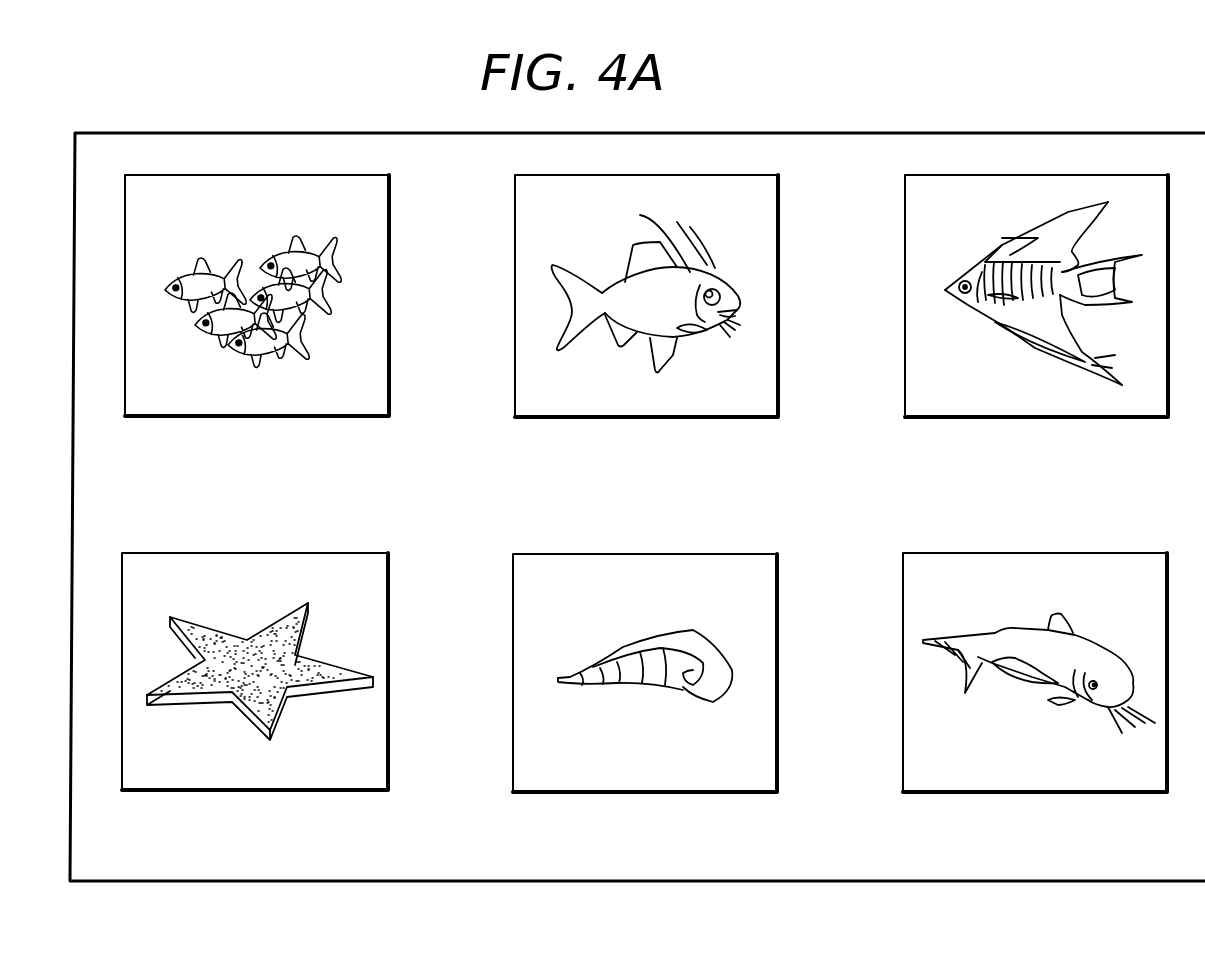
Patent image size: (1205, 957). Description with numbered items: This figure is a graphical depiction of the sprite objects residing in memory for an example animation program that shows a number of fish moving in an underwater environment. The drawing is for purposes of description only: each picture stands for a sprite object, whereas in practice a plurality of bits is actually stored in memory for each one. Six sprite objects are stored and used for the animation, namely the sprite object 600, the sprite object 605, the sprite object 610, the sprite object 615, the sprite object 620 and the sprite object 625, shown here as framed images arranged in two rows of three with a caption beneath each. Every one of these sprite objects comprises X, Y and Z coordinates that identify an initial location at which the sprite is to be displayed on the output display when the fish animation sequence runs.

The sprite object 600 is at (257, 316).
The sprite object 605 is at (646, 316).
The sprite object 610 is at (1036, 316).
The sprite object 615 is at (255, 695).
The sprite object 620 is at (645, 696).
The sprite object 625 is at (1035, 695).